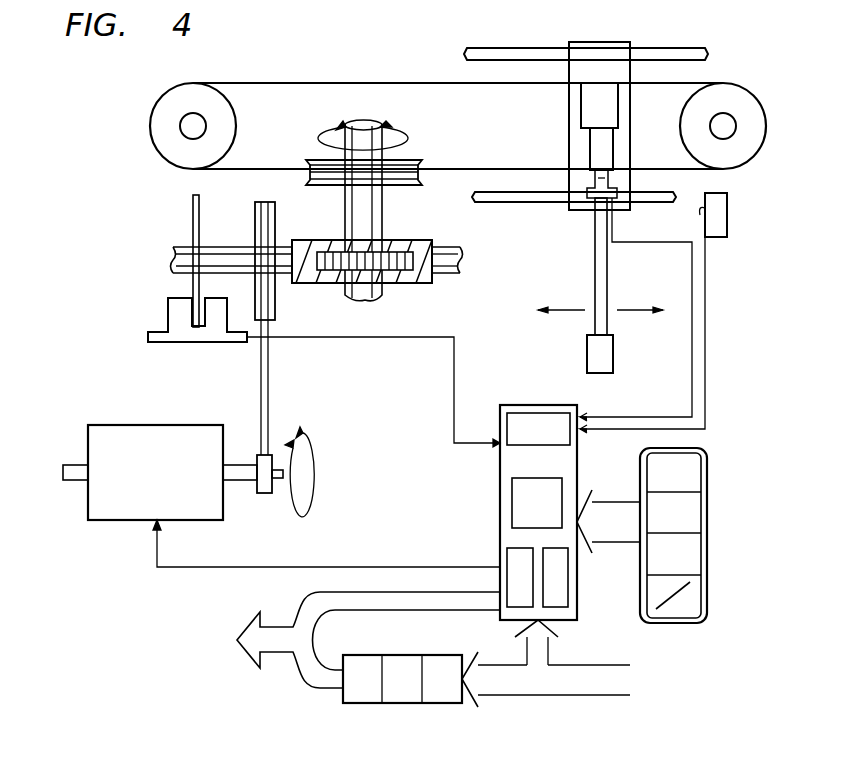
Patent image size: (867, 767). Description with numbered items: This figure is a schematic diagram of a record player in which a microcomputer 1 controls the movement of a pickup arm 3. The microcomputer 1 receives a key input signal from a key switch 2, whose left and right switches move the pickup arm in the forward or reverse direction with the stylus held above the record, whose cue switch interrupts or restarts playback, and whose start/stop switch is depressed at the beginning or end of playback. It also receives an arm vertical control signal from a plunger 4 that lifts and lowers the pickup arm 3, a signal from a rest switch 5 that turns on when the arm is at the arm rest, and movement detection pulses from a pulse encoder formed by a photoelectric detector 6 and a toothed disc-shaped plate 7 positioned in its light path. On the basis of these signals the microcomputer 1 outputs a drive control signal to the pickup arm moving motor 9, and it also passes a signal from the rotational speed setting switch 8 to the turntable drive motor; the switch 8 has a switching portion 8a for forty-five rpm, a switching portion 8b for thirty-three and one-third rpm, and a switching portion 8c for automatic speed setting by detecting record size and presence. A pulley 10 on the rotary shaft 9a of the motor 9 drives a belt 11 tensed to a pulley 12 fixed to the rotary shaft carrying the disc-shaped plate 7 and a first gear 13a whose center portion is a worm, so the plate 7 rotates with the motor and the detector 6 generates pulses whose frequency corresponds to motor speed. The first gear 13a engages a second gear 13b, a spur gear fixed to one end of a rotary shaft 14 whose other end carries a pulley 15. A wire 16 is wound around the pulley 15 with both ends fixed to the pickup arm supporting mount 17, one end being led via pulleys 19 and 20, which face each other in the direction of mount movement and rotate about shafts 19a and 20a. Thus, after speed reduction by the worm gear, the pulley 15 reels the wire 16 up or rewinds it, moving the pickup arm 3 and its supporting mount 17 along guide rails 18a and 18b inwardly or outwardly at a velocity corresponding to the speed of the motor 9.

The microcomputer 1 is at (500, 497).
The key switch 2 is at (710, 507).
The pickup arm 3 is at (607, 276).
The plunger 4 is at (592, 200).
The rest switch 5 is at (728, 215).
The photoelectric detector 6 is at (178, 336).
The disc-shaped plate 7 is at (199, 210).
The rotational speed setting switch 8 is at (355, 655).
The switching portion 8a is at (364, 703).
The switching portion 8b is at (444, 703).
The switching portion 8c is at (404, 703).
The pickup arm moving motor 9 is at (135, 425).
The rotary shaft 9a is at (245, 480).
The pulley 10 is at (272, 455).
The belt 11 is at (268, 368).
The pulley 12 is at (275, 216).
The first gear 13a is at (306, 273).
The second gear 13b is at (398, 252).
The rotary shaft 14 is at (382, 205).
The pulley 15 is at (318, 160).
The wire 16 is at (471, 169).
The pickup arm supporting mount 17 is at (573, 110).
The guide rail 18a is at (515, 48).
The guide rail 18b is at (505, 202).
The pulley 19 is at (165, 104).
The shaft 19a is at (186, 132).
The pulley 20 is at (755, 142).
The shaft 20a is at (727, 124).